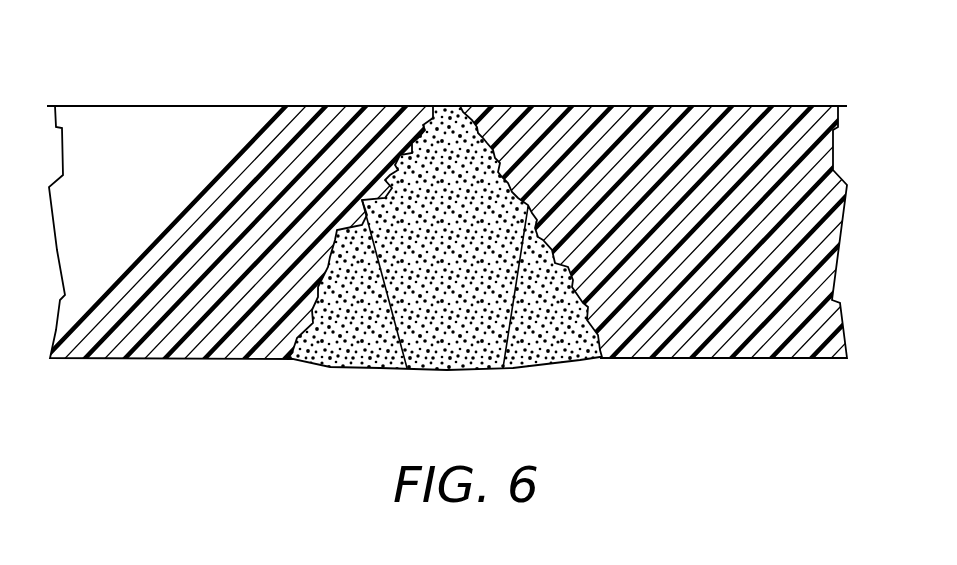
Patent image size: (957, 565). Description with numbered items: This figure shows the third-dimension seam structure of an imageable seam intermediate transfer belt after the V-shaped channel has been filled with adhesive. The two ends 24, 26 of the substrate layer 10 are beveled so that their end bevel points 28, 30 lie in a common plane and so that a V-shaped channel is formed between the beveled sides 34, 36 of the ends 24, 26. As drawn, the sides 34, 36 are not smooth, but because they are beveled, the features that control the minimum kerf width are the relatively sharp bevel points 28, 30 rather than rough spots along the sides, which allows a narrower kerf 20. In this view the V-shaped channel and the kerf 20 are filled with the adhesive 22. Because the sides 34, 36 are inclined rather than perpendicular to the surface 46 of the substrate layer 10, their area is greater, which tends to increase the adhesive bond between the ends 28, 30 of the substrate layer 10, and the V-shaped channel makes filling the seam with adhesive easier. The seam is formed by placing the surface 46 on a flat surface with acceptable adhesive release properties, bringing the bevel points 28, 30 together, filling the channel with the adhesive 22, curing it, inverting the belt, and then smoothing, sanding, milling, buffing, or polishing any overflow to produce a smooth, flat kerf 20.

The substrate layer 10 is at (642, 85).
The kerf 20 is at (448, 104).
The adhesive 22 is at (440, 343).
The end of the substrate layer 24 is at (203, 362).
The end of the substrate layer 26 is at (705, 360).
The end bevel point 28 is at (440, 106).
The end bevel point 30 is at (457, 106).
The side of the end 34 is at (407, 368).
The side of the end 36 is at (503, 368).
The surface of the substrate layer 46 is at (237, 107).